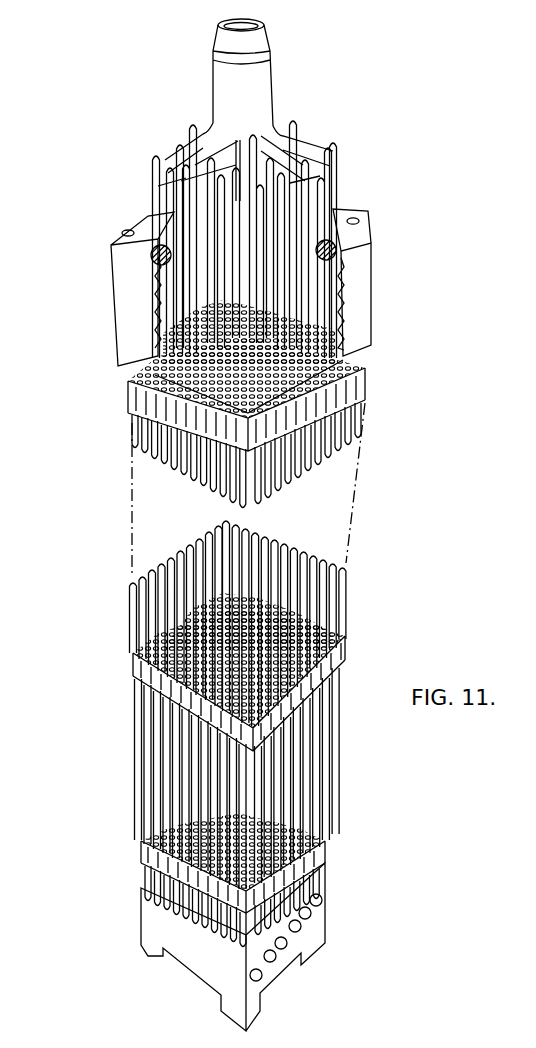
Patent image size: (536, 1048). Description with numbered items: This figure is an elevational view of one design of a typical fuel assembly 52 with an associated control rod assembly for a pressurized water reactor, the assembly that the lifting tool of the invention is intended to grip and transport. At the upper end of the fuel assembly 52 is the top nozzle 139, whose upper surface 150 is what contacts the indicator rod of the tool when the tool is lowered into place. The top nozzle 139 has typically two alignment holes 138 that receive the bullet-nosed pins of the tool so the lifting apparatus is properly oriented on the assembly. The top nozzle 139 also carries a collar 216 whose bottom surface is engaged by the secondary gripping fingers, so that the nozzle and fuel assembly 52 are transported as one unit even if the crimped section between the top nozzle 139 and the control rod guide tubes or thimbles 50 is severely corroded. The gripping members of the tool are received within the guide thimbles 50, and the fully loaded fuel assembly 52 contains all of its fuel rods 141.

The control rod guide tubes or thimbles 50 is at (157, 465).
The fuel assembly 52 is at (354, 486).
The alignment hole 138 is at (115, 226).
The top nozzle 139 is at (368, 248).
The fuel rods 141 is at (117, 373).
The upper surface 150 is at (138, 207).
The collar 216 is at (147, 253).